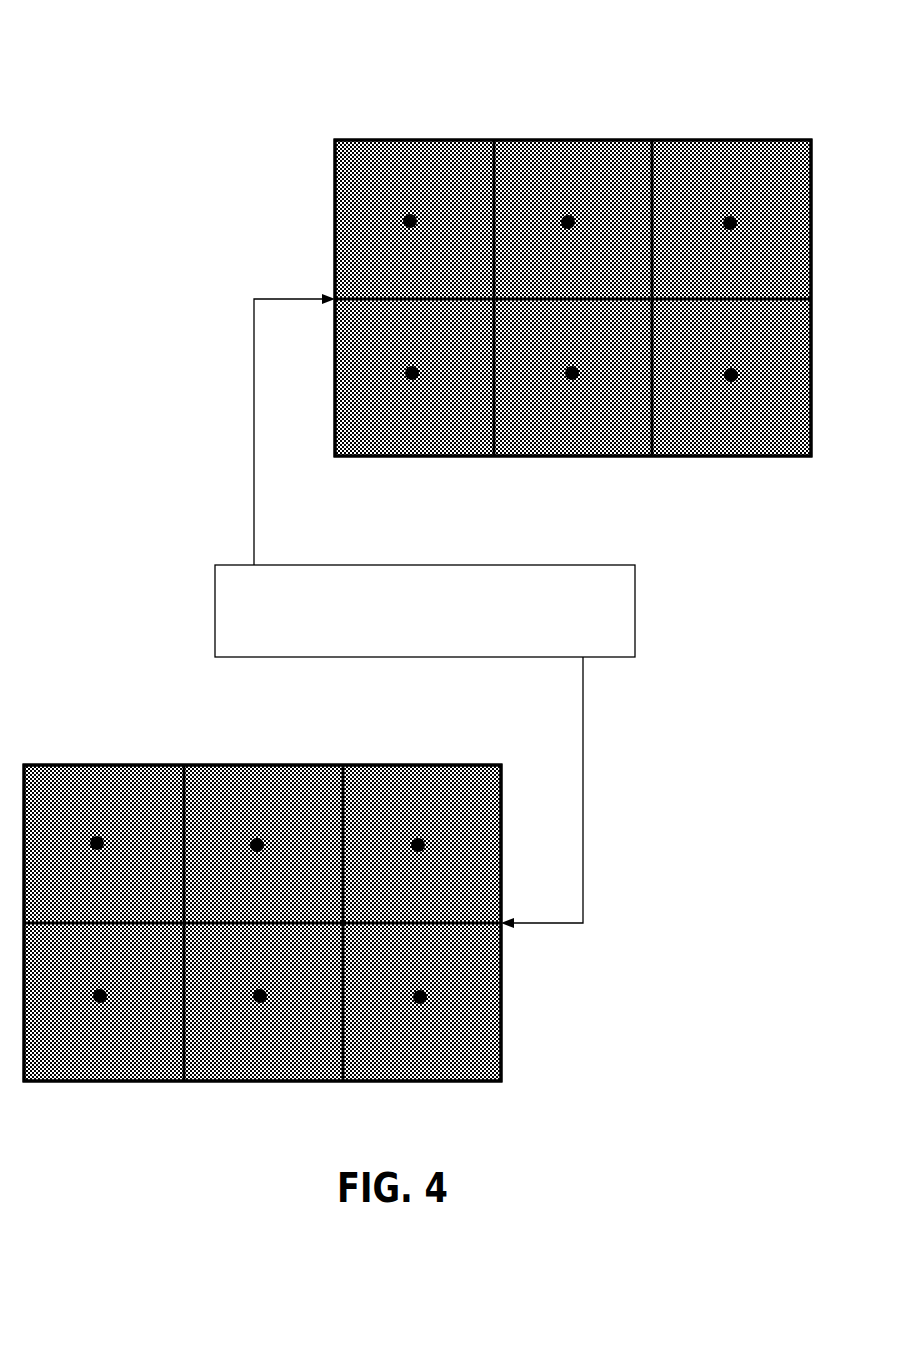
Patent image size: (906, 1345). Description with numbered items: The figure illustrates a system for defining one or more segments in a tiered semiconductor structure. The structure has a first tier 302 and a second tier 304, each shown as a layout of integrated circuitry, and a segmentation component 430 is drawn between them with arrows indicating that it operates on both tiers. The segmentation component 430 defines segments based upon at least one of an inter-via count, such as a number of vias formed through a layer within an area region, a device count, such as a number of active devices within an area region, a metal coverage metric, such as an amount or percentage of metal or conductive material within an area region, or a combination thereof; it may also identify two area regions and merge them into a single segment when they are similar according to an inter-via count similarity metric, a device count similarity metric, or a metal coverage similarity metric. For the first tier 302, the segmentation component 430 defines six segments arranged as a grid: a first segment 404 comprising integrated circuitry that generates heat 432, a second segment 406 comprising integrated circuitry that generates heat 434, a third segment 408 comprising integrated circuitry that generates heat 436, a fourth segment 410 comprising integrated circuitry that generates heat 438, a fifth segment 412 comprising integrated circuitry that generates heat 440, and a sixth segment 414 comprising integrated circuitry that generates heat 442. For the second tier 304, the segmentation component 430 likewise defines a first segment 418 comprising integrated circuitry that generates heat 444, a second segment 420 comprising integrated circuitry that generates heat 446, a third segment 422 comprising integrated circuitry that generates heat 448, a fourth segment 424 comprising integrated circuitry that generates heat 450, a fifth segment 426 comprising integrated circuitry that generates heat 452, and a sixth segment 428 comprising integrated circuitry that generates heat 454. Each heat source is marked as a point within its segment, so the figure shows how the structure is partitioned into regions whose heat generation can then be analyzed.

The first tier 302 is at (516, 64).
The second tier 304 is at (138, 668).
The first segment 404 is at (420, 140).
The second segment 406 is at (573, 140).
The third segment 408 is at (715, 140).
The fourth segment 410 is at (415, 456).
The fifth segment 412 is at (573, 456).
The sixth segment 414 is at (710, 456).
The first segment 418 is at (120, 765).
The second segment 420 is at (268, 765).
The third segment 422 is at (412, 765).
The fourth segment 424 is at (115, 1081).
The fifth segment 426 is at (270, 1081).
The sixth segment 428 is at (405, 1081).
The segmentation component 430 is at (635, 622).
The heat 432 is at (410, 221).
The heat 434 is at (568, 222).
The heat 436 is at (730, 223).
The heat 438 is at (412, 373).
The heat 440 is at (572, 373).
The heat 442 is at (731, 375).
The heat 444 is at (97, 843).
The heat 446 is at (257, 845).
The heat 448 is at (418, 845).
The heat 450 is at (100, 996).
The heat 452 is at (260, 996).
The heat 454 is at (420, 997).